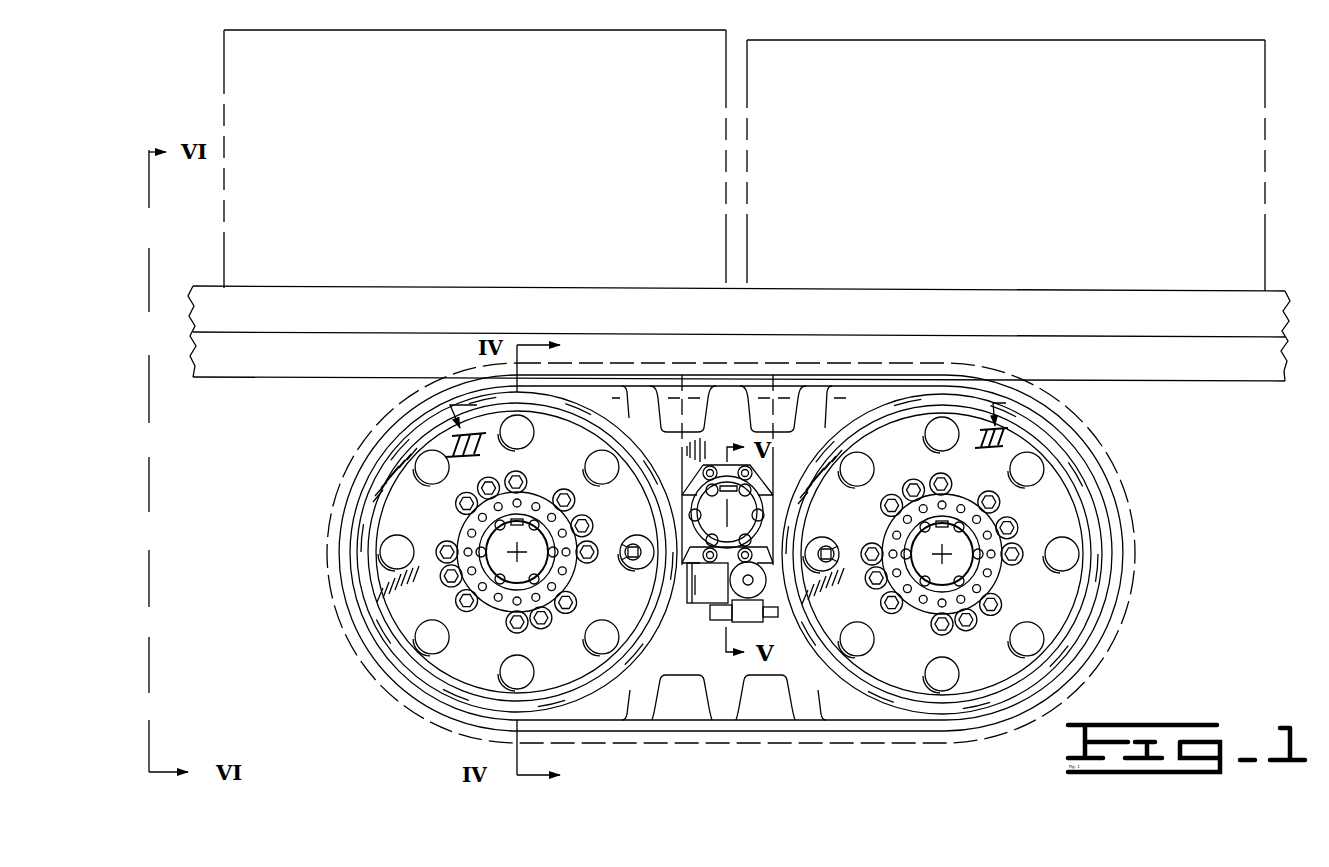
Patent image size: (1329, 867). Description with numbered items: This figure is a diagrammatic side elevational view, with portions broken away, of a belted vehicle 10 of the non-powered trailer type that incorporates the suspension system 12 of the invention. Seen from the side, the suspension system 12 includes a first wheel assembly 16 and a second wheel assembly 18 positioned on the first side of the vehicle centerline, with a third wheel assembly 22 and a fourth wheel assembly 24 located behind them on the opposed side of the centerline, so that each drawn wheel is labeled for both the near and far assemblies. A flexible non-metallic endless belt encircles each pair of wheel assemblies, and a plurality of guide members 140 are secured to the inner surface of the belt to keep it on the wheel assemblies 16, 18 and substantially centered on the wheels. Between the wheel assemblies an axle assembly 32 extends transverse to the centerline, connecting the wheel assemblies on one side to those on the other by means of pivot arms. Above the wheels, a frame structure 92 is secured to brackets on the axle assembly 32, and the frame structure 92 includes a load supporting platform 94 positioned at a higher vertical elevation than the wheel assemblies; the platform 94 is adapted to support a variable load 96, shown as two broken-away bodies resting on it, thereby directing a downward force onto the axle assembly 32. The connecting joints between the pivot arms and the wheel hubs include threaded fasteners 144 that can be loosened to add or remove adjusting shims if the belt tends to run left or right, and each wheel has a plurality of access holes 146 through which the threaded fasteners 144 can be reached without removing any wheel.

The belted vehicle 10 is at (1177, 426).
The suspension system 12 is at (687, 554).
The first wheel assembly 16 is at (1005, 554).
The third wheel assembly 22 is at (1067, 587).
The second wheel assembly 18 is at (453, 552).
The fourth wheel assembly 24 is at (391, 611).
The axle assembly 32 is at (680, 525).
The frame structure 92 is at (330, 372).
The load supporting platform 94 is at (1268, 312).
The variable load 96 is at (451, 35).
The guide members 140 is at (768, 694).
The threaded fasteners 144 is at (645, 574).
The access holes 146 is at (594, 465).